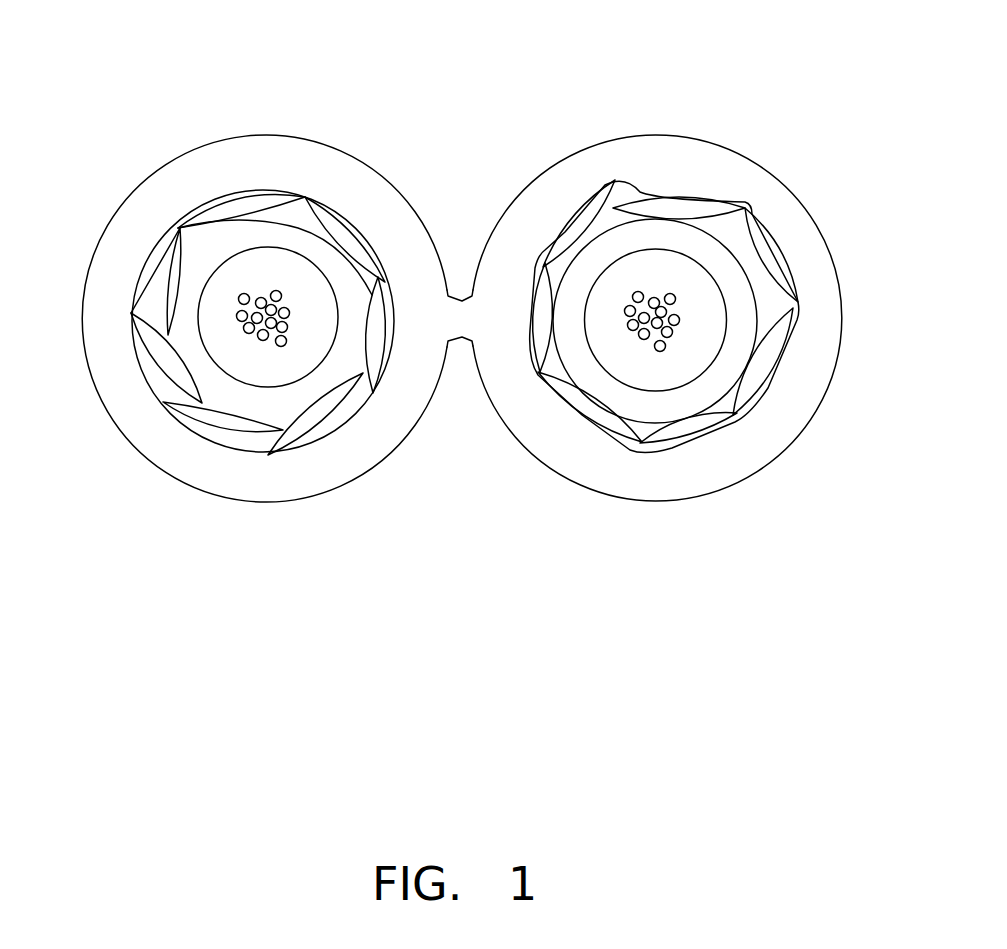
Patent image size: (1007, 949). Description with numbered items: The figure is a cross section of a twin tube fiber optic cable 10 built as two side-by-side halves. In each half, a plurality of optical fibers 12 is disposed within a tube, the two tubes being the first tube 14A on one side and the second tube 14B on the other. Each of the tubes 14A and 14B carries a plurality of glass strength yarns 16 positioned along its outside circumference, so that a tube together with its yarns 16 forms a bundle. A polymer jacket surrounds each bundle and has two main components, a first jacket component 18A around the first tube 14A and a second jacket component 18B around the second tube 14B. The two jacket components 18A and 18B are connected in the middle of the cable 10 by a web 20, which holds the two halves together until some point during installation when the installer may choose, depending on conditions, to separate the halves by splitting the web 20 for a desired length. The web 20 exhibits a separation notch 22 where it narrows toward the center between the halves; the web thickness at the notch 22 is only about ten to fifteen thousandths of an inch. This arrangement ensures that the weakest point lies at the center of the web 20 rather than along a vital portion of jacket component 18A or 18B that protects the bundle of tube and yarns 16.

The twin tube fiber optic cable 10 is at (375, 578).
The fibers 12 is at (243, 297).
The first tube 14A is at (323, 252).
The second tube 14B is at (633, 237).
The glass strength yarns 16 is at (222, 422).
The first jacket component 18A is at (157, 200).
The second jacket component 18B is at (780, 213).
The web 20 is at (462, 318).
The separation notch 22 is at (462, 300).